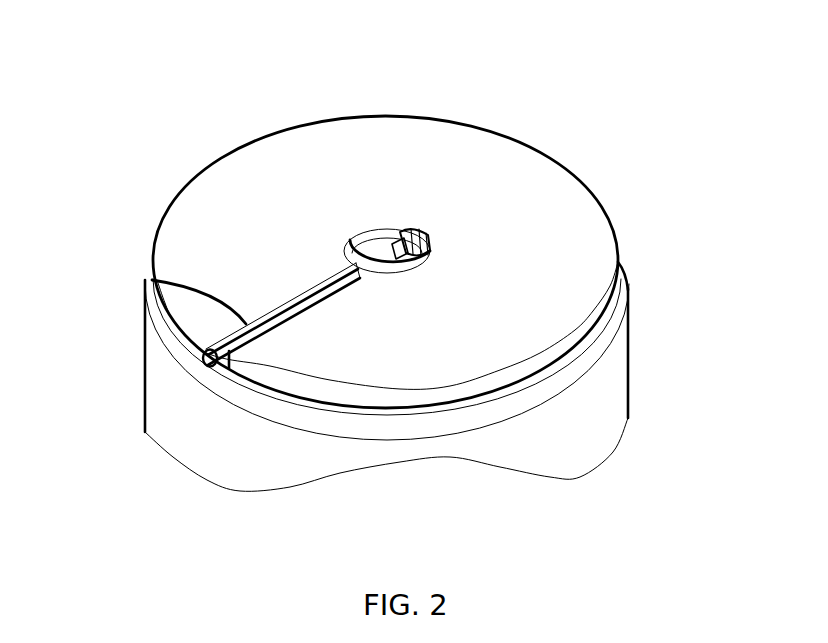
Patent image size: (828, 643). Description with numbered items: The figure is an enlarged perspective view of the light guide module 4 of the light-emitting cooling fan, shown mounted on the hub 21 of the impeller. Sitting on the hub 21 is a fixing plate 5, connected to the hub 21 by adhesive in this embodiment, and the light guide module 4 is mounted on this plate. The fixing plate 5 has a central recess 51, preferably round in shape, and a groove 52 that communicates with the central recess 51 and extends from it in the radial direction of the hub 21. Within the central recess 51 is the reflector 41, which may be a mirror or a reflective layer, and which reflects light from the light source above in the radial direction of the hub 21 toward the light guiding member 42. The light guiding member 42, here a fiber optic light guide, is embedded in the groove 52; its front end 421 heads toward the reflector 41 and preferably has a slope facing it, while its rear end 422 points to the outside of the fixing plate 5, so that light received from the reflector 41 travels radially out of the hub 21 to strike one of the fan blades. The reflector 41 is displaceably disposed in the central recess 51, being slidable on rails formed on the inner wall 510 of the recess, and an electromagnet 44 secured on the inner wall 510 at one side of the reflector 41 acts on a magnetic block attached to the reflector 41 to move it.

The light guide module 4 is at (473, 295).
The fixing plate 5 is at (603, 200).
The hub 21 is at (629, 372).
The reflector 41 is at (412, 259).
The light guiding member 42 is at (334, 284).
The electromagnet 44 is at (397, 232).
The central recess 51 is at (363, 230).
The groove 52 is at (153, 280).
The front end 421 is at (350, 240).
The rear end 422 is at (204, 364).
The inner wall 510 is at (357, 233).